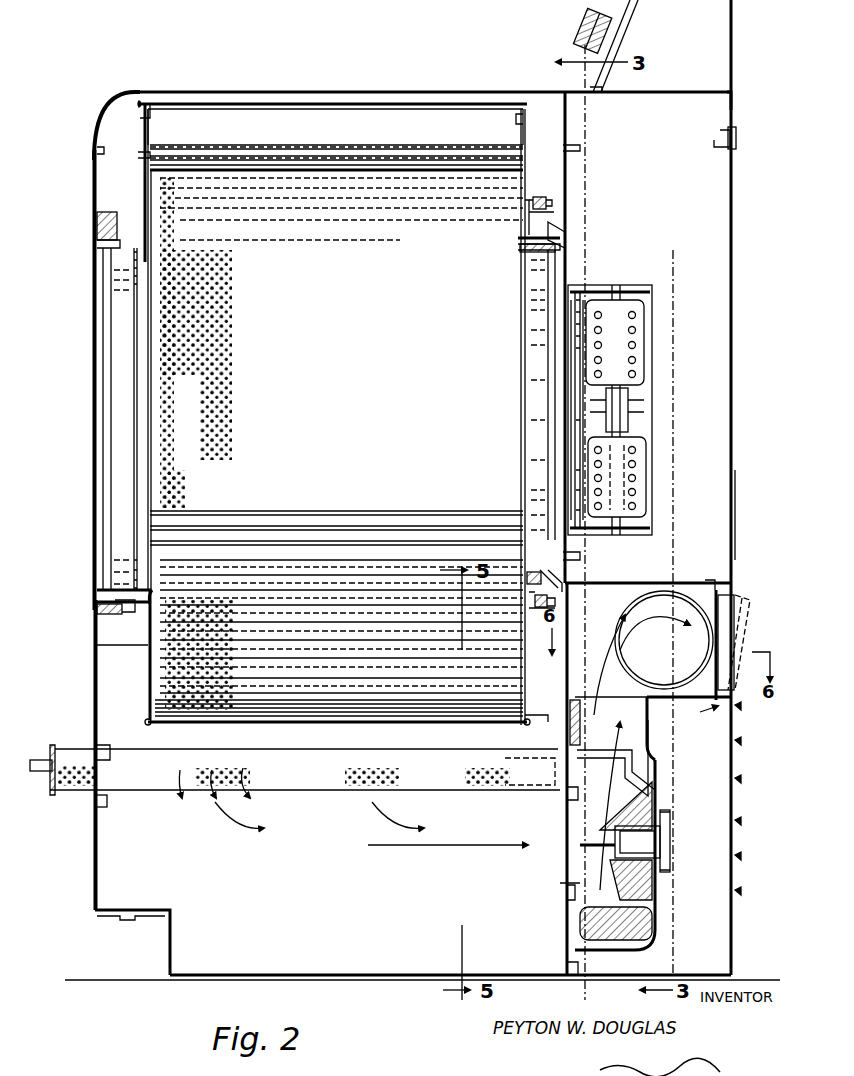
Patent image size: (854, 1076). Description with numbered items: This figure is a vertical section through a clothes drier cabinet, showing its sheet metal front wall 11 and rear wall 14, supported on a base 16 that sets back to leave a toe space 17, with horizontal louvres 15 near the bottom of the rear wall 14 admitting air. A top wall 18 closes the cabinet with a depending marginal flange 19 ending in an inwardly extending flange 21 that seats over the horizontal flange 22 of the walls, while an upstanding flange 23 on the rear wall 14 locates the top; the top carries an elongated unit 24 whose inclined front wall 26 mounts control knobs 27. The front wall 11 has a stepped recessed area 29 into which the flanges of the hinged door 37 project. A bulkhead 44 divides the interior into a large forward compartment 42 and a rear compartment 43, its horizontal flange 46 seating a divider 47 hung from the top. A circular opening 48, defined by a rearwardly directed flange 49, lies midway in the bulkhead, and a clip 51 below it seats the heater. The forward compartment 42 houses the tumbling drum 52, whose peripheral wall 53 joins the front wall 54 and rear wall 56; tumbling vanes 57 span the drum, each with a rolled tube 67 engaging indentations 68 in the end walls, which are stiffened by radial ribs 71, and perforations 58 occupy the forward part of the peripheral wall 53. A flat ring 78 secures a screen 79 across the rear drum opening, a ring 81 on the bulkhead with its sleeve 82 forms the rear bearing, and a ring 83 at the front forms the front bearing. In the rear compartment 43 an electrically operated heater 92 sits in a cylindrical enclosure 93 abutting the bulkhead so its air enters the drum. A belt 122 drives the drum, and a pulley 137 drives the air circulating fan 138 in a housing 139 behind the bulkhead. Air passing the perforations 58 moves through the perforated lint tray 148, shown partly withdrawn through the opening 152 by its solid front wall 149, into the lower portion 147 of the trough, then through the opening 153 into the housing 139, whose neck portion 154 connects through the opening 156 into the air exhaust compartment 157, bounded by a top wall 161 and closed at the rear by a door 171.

The front wall 11 is at (94, 688).
The rear wall 14 is at (732, 440).
The horizontal louvres 15 is at (734, 755).
The base 16 is at (168, 973).
The toe space 17 is at (138, 938).
The top wall 18 is at (283, 90).
The marginal flange 19 is at (735, 106).
The inwardly extending flange 21 is at (718, 138).
The horizontal flange 22 is at (100, 158).
The upstanding flange 23 is at (736, 140).
The elongated unit 24 is at (733, 15).
The inclined front wall 26 is at (622, 20).
The control knobs 27 is at (582, 22).
The recessed area 29 is at (95, 222).
The door 37 is at (92, 412).
The forward compartment 42 is at (108, 636).
The rear compartment 43 is at (720, 522).
The bulkhead 44 is at (565, 700).
The horizontal flange 46 is at (575, 152).
The divider 47 is at (568, 122).
The circular opening 48 is at (570, 385).
The rearwardly directed flange 49 is at (568, 322).
The clip 51 is at (580, 557).
The tumbling drum 52 is at (362, 106).
The peripheral wall 53 is at (445, 725).
The front wall 54 is at (150, 682).
The rear wall 56 is at (590, 697).
The tumbling vanes 57 is at (200, 130).
The perforations 58 is at (222, 366).
The tube 67 is at (352, 173).
The indentations 68 is at (140, 175).
The radial ribs 71 is at (160, 627).
The flat ring 78 is at (565, 580).
The screen 79 is at (522, 287).
The ring 81 is at (566, 240).
The sleeve 82 is at (518, 236).
The ring 83 is at (133, 606).
The electrically operated heater 92 is at (635, 345).
The cylindrical enclosure 93 is at (632, 270).
The belt 122 is at (557, 190).
The pulley 137 is at (672, 845).
The air circulating fan 138 is at (640, 760).
The housing 139 is at (655, 944).
The lower portion of the trough 147 is at (125, 878).
The lint tray 148 is at (135, 798).
The front wall 149 is at (62, 726).
The opening 152 is at (94, 806).
The opening 153 is at (565, 892).
The neck portion 154 is at (655, 727).
The opening 156 is at (532, 682).
The air exhaust compartment 157 is at (590, 608).
The top wall 161 is at (640, 583).
The door 171 is at (742, 640).